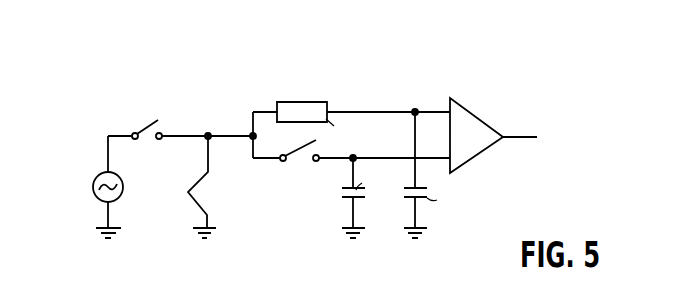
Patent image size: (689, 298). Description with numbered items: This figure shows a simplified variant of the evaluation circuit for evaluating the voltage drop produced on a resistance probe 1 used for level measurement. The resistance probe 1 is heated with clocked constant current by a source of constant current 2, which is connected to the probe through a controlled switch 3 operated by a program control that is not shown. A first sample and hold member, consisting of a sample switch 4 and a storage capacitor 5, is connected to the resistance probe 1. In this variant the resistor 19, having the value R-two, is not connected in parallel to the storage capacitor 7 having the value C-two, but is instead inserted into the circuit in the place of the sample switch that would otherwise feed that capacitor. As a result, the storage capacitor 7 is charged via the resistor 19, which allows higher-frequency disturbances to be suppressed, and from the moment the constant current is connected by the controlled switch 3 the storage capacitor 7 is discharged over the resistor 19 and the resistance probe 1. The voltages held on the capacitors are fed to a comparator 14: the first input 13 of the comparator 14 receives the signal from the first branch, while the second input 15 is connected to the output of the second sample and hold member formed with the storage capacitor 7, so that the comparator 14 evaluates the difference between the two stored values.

The resistance probe 1 is at (186, 188).
The source of constant current 2 is at (101, 185).
The controlled switch 3 is at (150, 117).
The sample switch 4 is at (311, 156).
The storage capacitor 5 is at (343, 196).
The storage capacitor 7 is at (404, 193).
The first input of comparator 13 is at (438, 158).
The comparator 14 is at (478, 123).
The second input of comparator 15 is at (430, 109).
The resistor 19 is at (303, 107).